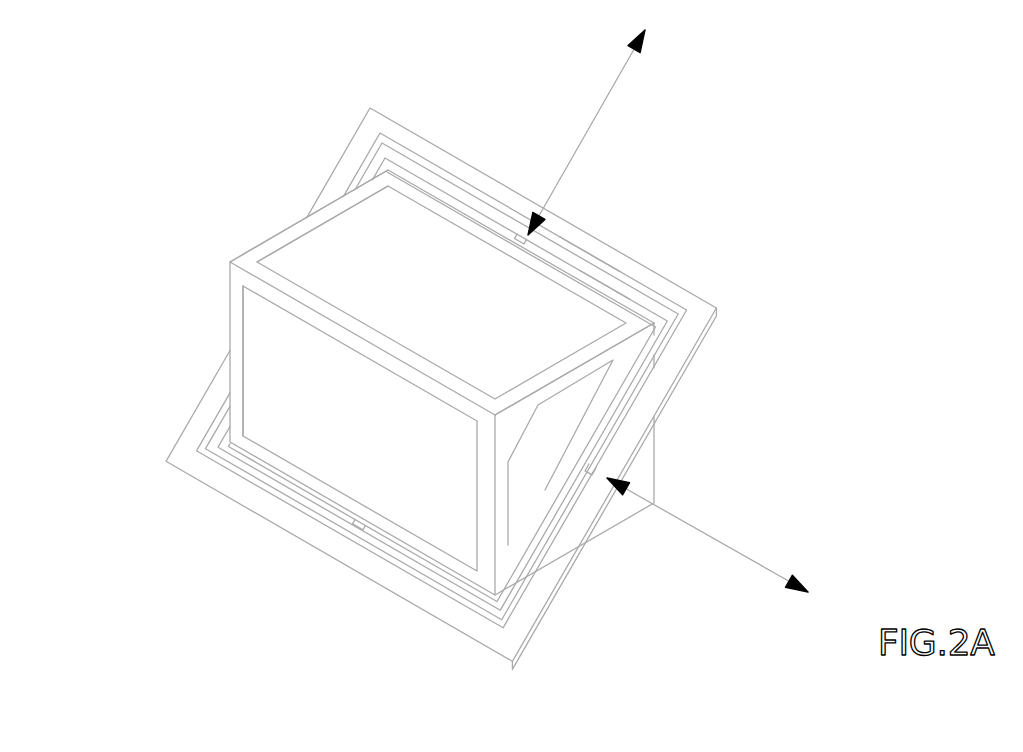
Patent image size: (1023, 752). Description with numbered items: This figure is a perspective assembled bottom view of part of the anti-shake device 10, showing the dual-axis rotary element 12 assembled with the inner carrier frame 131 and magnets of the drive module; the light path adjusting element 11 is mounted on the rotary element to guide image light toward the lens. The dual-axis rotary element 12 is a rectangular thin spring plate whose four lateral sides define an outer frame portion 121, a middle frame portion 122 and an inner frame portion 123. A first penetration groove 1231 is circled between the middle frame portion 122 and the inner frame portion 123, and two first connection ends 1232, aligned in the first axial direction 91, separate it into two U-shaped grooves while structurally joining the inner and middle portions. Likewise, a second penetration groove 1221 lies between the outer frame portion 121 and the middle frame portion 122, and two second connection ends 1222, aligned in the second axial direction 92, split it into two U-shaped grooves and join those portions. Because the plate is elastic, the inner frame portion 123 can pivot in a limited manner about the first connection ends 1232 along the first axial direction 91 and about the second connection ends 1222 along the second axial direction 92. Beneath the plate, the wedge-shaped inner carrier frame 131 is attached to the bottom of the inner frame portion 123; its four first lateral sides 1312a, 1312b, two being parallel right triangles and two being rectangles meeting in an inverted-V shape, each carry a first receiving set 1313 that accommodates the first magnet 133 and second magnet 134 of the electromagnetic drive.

The anti-shake device 10 is at (693, 260).
The light path adjusting element 11 is at (655, 455).
The dual-axis rotary element 12 is at (486, 380).
The outer frame portion 121 is at (685, 290).
The middle frame portion 122 is at (668, 322).
The inner frame portion 123 is at (643, 343).
The second penetration groove 1221 is at (597, 263).
The second connection ends 1222 is at (593, 468).
The first penetration groove 1231 is at (607, 290).
The first connection ends 1232 is at (528, 242).
The inner carrier frame 131 is at (431, 350).
The first lateral sides 1312a is at (503, 515).
The first lateral sides 1312b is at (268, 242).
The first receiving set 1313 is at (320, 216).
The first magnet 133 is at (580, 403).
The second magnet 134 is at (307, 250).
The first axial direction 91 is at (577, 150).
The second axial direction 92 is at (702, 533).